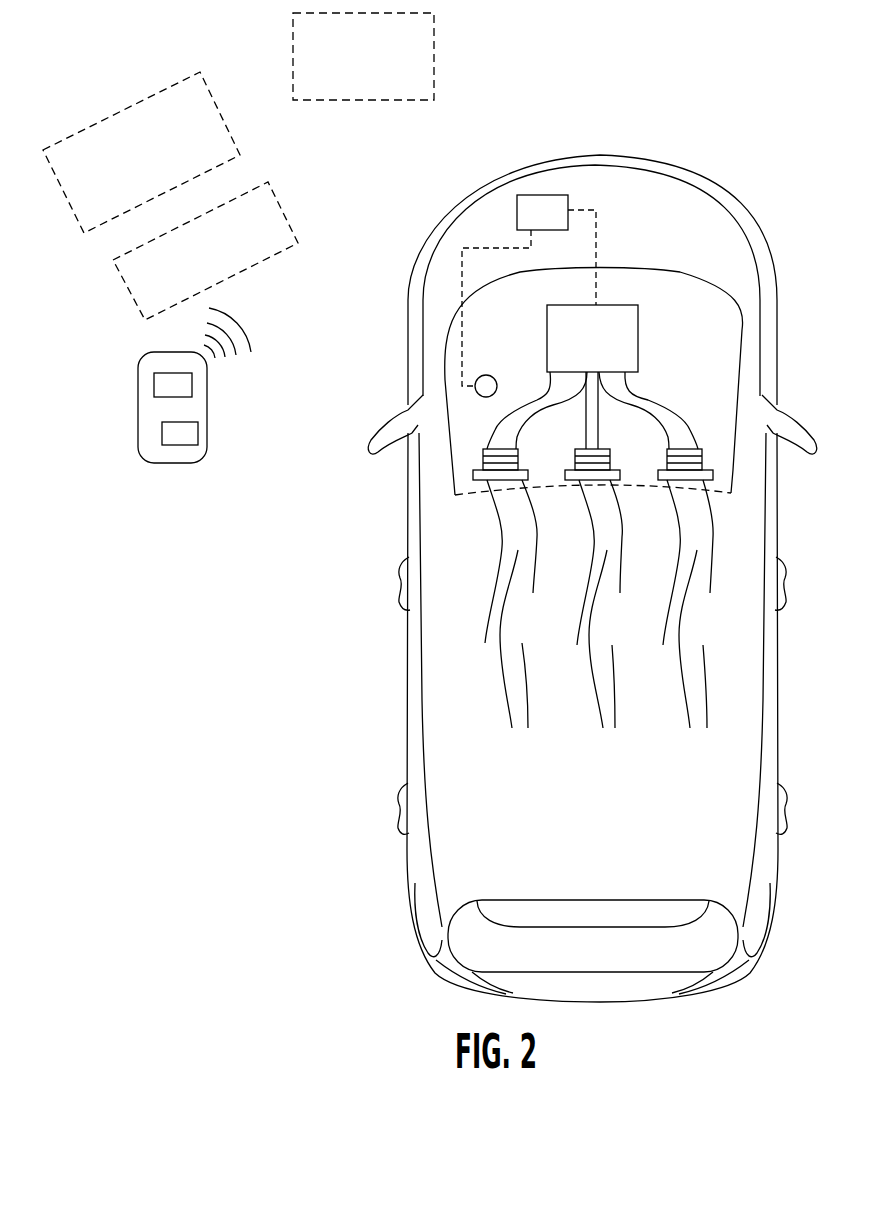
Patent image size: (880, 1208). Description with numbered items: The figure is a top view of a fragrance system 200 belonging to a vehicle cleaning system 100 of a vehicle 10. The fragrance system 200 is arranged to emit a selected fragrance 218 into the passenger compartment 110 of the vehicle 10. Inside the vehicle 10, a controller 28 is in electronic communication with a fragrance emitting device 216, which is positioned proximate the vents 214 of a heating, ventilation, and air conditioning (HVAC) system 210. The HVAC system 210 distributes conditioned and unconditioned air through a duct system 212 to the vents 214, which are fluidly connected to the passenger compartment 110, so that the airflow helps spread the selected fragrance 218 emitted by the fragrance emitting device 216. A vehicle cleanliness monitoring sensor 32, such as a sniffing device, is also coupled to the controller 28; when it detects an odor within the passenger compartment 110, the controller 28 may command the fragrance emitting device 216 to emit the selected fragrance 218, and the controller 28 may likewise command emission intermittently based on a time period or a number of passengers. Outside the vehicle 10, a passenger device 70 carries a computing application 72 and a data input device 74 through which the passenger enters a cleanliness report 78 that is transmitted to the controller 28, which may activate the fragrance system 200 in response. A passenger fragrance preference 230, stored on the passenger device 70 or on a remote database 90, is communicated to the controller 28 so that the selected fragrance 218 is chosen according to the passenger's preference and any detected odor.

The vehicle 10 is at (683, 193).
The controller 28 is at (554, 227).
The vehicle cleanliness monitoring sensor 32 is at (485, 374).
The passenger device 70 is at (152, 352).
The computing application 72 is at (192, 384).
The data input device 74 is at (198, 432).
The cleanliness report 78 is at (258, 184).
The remote database 90 is at (434, 47).
The vehicle cleaning system 100 is at (408, 186).
The passenger compartment 110 is at (610, 815).
The fragrance system 200 is at (395, 260).
The heating, ventilation, and air conditioning (HVAC) system 210 is at (610, 350).
The duct system 212 is at (648, 397).
The vents 214 is at (695, 460).
The fragrance emitting device 216 is at (712, 475).
The selected fragrance 218 is at (713, 557).
The passenger fragrance preference 230 is at (180, 74).